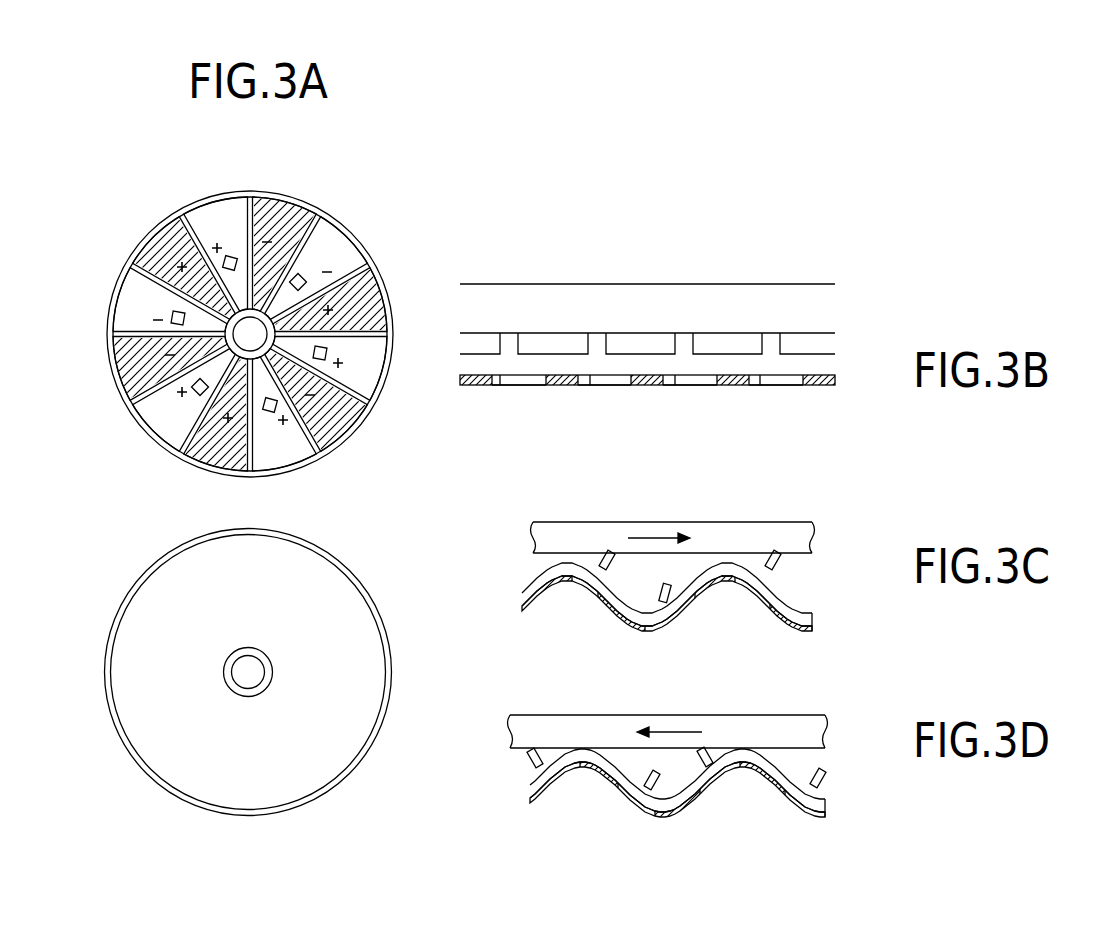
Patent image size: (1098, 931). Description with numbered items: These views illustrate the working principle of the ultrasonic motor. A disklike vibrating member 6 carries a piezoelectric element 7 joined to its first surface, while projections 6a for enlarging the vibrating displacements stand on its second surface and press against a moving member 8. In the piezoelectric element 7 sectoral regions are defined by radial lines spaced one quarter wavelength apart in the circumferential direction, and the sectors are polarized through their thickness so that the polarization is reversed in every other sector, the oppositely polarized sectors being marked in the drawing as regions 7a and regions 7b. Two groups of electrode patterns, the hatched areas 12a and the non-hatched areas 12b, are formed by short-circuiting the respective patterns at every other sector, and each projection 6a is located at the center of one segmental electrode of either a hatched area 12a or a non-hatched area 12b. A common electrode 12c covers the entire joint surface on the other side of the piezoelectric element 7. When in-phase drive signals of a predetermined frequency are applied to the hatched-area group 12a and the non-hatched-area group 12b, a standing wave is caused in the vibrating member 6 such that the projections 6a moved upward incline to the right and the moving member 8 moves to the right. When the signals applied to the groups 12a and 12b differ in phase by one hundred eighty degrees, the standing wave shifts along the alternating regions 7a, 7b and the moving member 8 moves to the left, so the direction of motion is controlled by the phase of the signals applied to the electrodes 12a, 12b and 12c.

In FIG. 3C, the vibrating member 6 is at (803, 615).
In FIG. 3D, the vibrating member 6 is at (822, 803).
In FIG. 3A, the projections 6a is at (233, 257).
In FIG. 3B, the projections 6a is at (515, 342).
In FIG. 3C, the projections 6a is at (780, 568).
In FIG. 3D, the projections 6a is at (830, 777).
In FIG. 3A, the piezoelectric element 7 is at (418, 182).
In FIG. 3C, the piezoelectric element 7 is at (808, 630).
In FIG. 3D, the piezoelectric element 7 is at (823, 815).
In FIG. 3A, the charged region 7a is at (255, 200).
In FIG. 3B, the charged region 7a is at (475, 385).
In FIG. 3C, the charged region 7a is at (555, 590).
In FIG. 3D, the charged region 7a is at (603, 782).
In FIG. 3A, the uncharged region 7b is at (193, 207).
In FIG. 3B, the uncharged region 7b is at (518, 385).
In FIG. 3C, the uncharged region 7b is at (585, 592).
In FIG. 3D, the uncharged region 7b is at (568, 782).
In FIG. 3B, the moving member 8 is at (815, 308).
In FIG. 3C, the moving member 8 is at (798, 540).
In FIG. 3D, the moving member 8 is at (817, 725).
In FIG. 3A, the hatched-area electrode pattern group 12a is at (277, 223).
In FIG. 3B, the hatched-area electrode pattern group 12a is at (460, 385).
In FIG. 3A, the non-hatched-area electrode pattern group 12b is at (217, 217).
In FIG. 3B, the non-hatched-area electrode pattern group 12b is at (500, 385).
In FIG. 3A, the common electrode 12c is at (281, 798).
In FIG. 3B, the common electrode 12c is at (778, 372).